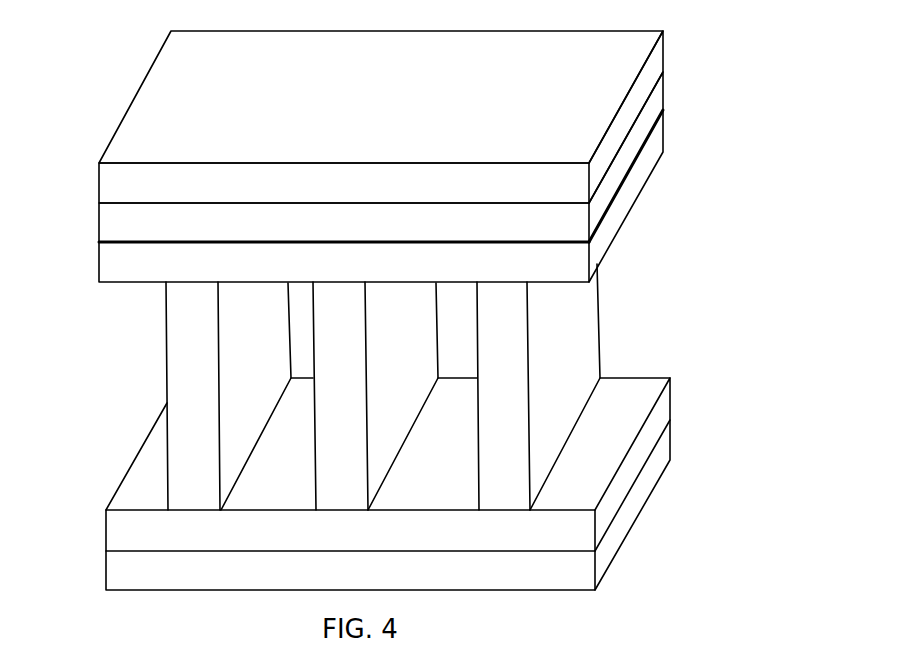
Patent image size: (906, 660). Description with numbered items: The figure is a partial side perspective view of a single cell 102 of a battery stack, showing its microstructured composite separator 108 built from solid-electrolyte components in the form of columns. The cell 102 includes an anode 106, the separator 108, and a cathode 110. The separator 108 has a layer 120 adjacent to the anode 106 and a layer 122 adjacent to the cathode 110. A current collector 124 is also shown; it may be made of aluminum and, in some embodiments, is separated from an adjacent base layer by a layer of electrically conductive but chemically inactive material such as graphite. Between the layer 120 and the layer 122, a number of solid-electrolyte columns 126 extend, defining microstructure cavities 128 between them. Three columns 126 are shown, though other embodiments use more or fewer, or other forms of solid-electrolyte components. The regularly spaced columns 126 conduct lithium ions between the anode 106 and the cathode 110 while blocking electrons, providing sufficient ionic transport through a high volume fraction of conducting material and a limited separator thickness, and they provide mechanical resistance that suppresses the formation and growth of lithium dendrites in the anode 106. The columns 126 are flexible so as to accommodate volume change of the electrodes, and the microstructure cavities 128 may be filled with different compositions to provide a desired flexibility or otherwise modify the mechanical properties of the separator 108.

The cell 102 is at (415, 145).
The current collector 124 is at (137, 95).
The cathode 110 is at (103, 223).
The layer adjacent to the cathode 122 is at (100, 282).
The separator 108 is at (414, 448).
The layer adjacent to the anode 120 is at (106, 510).
The anode 106 is at (603, 567).
The solid-electrolyte components in the form of columns 126 is at (170, 362).
The microstructure cavities 128 is at (222, 381).